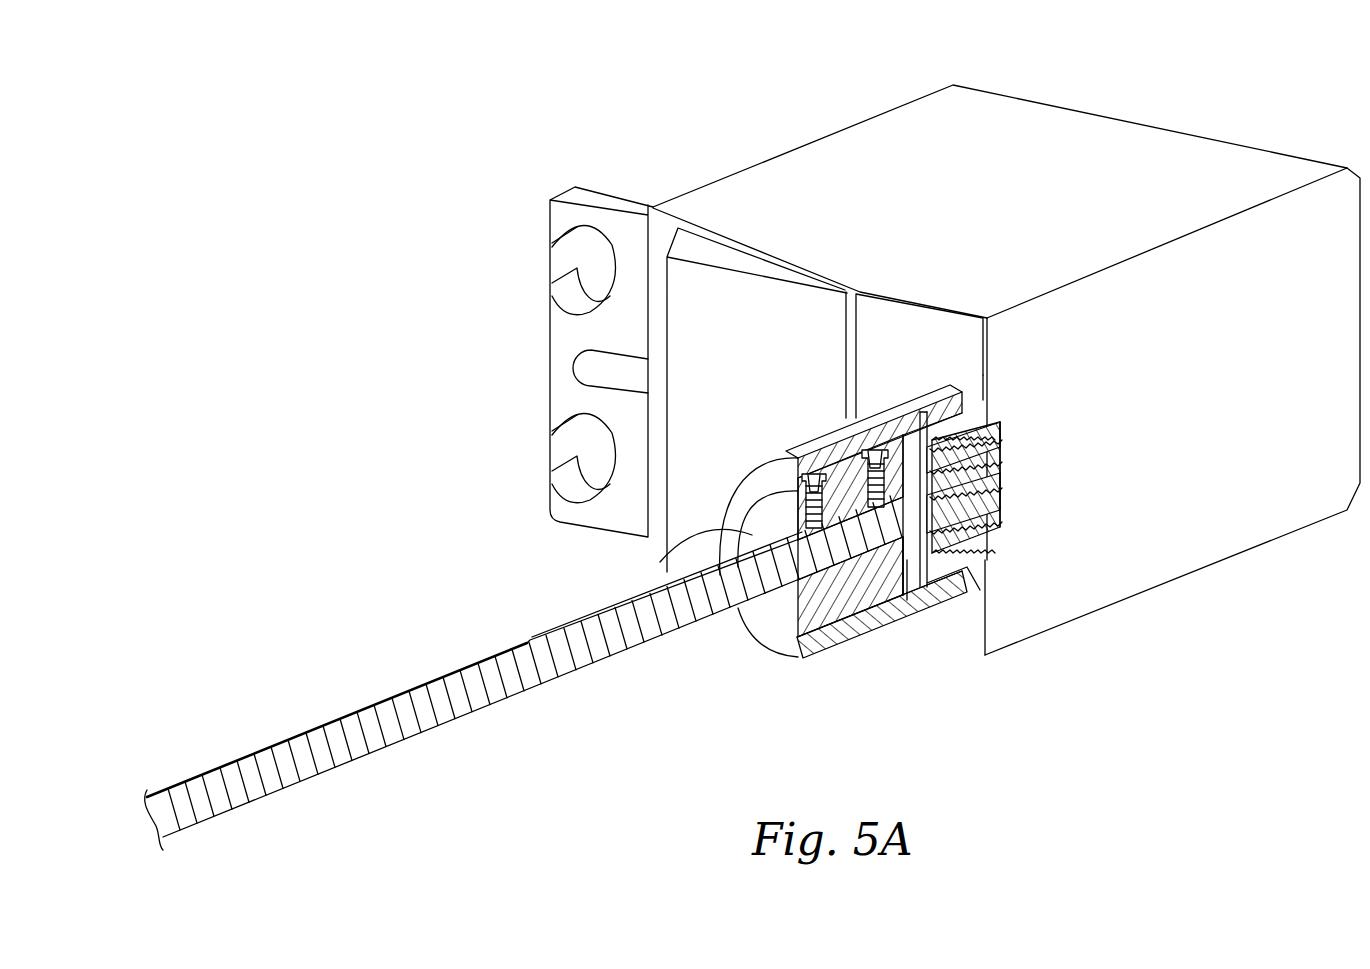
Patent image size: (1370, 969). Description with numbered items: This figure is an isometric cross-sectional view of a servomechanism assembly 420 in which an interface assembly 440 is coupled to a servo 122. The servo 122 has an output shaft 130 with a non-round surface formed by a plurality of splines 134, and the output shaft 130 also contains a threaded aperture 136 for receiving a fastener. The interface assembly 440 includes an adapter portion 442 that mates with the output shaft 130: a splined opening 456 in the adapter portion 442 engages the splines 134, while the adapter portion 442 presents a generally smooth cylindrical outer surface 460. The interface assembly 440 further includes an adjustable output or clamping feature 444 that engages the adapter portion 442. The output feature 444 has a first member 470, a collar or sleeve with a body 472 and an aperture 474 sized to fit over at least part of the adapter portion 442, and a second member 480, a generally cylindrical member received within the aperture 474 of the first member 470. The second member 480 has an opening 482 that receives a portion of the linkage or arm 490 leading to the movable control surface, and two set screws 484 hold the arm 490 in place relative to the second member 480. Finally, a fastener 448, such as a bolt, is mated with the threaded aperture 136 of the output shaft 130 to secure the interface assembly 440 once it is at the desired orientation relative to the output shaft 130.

The servo 122 is at (1247, 553).
The output shaft 130 is at (990, 533).
The splines 134 is at (980, 497).
The threaded aperture 136 is at (997, 436).
The servomechanism assembly 420 is at (1120, 73).
The interface assembly 440 is at (718, 471).
The adapter portion 442 is at (960, 633).
The output feature 444 is at (790, 440).
The fastener 448 is at (895, 620).
The splined opening 456 is at (988, 400).
The cylindrical outer surface 460 is at (948, 383).
The first member 470 is at (822, 640).
The body 472 is at (852, 660).
The aperture 474 is at (798, 650).
The second member 480 is at (783, 633).
The opening 482 is at (677, 547).
The set screws 484 is at (812, 483).
The arm 490 is at (527, 680).